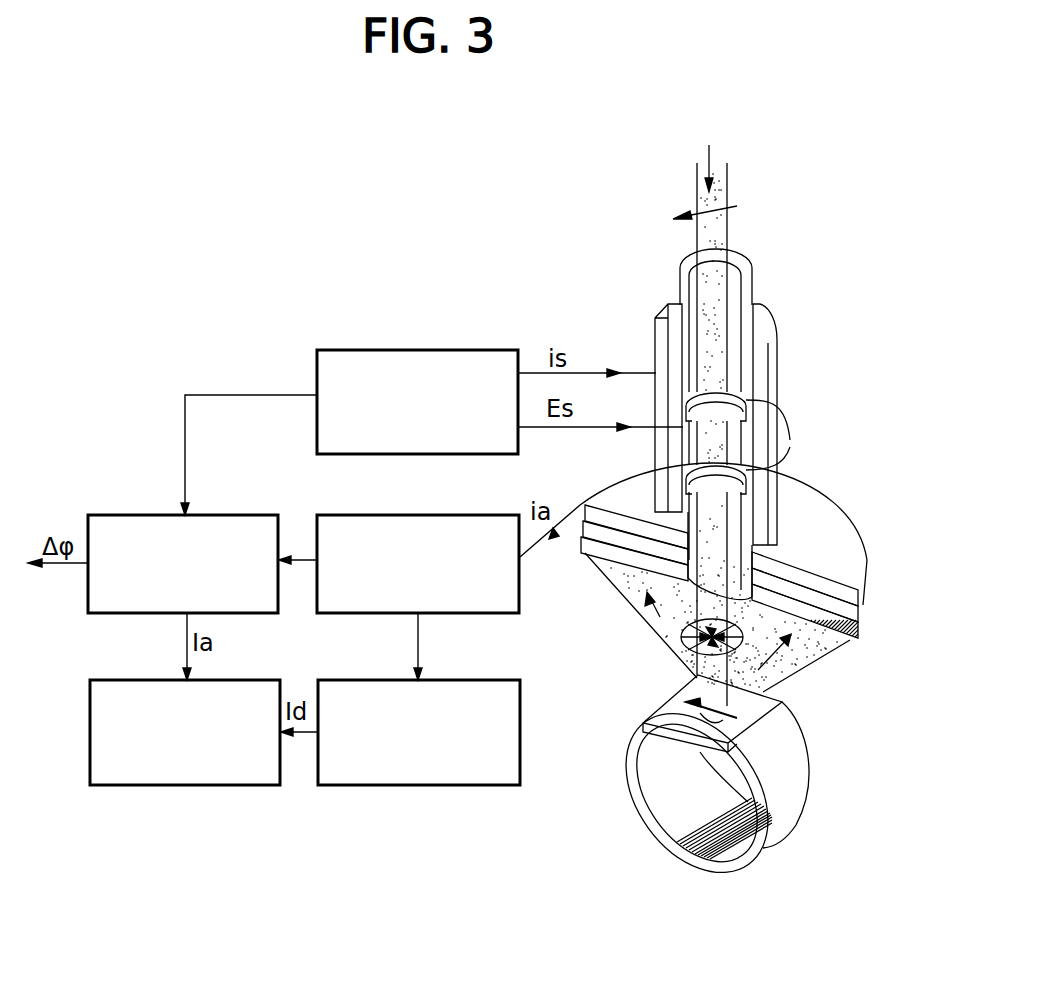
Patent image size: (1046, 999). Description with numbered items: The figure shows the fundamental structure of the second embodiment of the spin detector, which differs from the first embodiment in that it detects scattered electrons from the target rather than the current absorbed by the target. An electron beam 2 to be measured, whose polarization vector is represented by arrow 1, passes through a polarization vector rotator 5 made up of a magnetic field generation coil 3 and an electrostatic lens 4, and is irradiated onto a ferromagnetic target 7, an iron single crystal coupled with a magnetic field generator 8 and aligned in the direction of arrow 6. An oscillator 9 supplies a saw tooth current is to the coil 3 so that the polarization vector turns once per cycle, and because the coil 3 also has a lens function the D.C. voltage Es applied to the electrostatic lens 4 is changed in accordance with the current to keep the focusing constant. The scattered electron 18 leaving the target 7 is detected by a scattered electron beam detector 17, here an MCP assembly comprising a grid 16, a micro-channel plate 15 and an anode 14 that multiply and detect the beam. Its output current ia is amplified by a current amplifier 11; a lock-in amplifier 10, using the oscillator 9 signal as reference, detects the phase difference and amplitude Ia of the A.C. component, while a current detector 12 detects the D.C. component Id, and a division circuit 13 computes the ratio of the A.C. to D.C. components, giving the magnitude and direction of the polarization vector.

The arrow representing polarization vector 1 is at (727, 206).
The electron beam 2 is at (727, 228).
The magnetic field generation coil 3 is at (777, 368).
The electrostatic lens 4 is at (748, 443).
The polarization vector rotator 5 is at (812, 352).
The arrow indicating target direction 6 is at (737, 727).
The ferromagnetic target 7 is at (738, 728).
The magnetic field generator 8 is at (785, 792).
The oscillator 9 is at (482, 350).
The lock-in amplifier 10 is at (241, 515).
The current amplifier 11 is at (493, 515).
The current detector 12 is at (485, 786).
The division circuit 13 is at (250, 680).
The anode 14 is at (596, 555).
The micro-channel plate 15 is at (623, 540).
The grid 16 is at (632, 542).
The scattered electron beam detector 17 is at (560, 573).
The scattered electron 18 is at (807, 660).